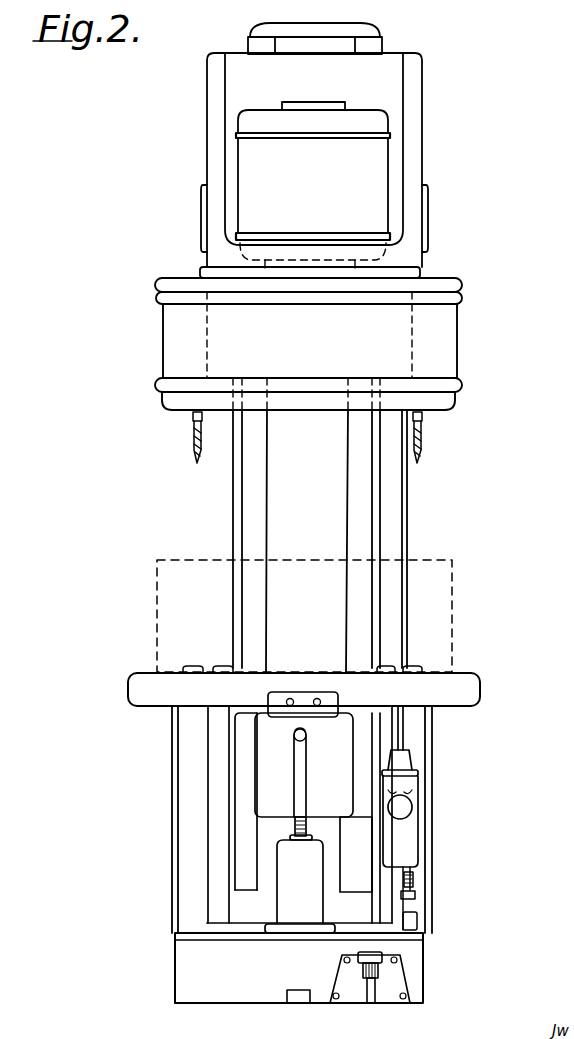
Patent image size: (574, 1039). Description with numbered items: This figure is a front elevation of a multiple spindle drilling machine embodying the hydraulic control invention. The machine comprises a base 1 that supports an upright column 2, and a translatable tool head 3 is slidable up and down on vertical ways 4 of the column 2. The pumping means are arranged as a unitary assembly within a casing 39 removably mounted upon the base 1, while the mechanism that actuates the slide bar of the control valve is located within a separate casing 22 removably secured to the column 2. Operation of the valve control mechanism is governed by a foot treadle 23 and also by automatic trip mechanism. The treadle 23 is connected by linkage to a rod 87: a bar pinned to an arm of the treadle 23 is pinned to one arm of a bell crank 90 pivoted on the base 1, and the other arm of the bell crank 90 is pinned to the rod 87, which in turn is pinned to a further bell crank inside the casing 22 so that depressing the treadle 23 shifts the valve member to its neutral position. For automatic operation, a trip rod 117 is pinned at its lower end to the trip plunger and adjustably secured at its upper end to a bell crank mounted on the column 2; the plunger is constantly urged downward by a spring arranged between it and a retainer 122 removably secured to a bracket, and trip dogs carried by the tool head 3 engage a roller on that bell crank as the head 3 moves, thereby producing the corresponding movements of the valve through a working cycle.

The base 1 is at (299, 968).
The column 2 is at (233, 515).
The tool head 3 is at (308, 344).
The vertical ways 4 is at (352, 477).
The trip rod 117 is at (410, 510).
The casing 39 is at (433, 728).
The retainer 122 is at (412, 761).
The casing 22 is at (420, 805).
The rod 87 is at (416, 896).
The bell crank 90 is at (418, 916).
The foot treadle 23 is at (358, 952).